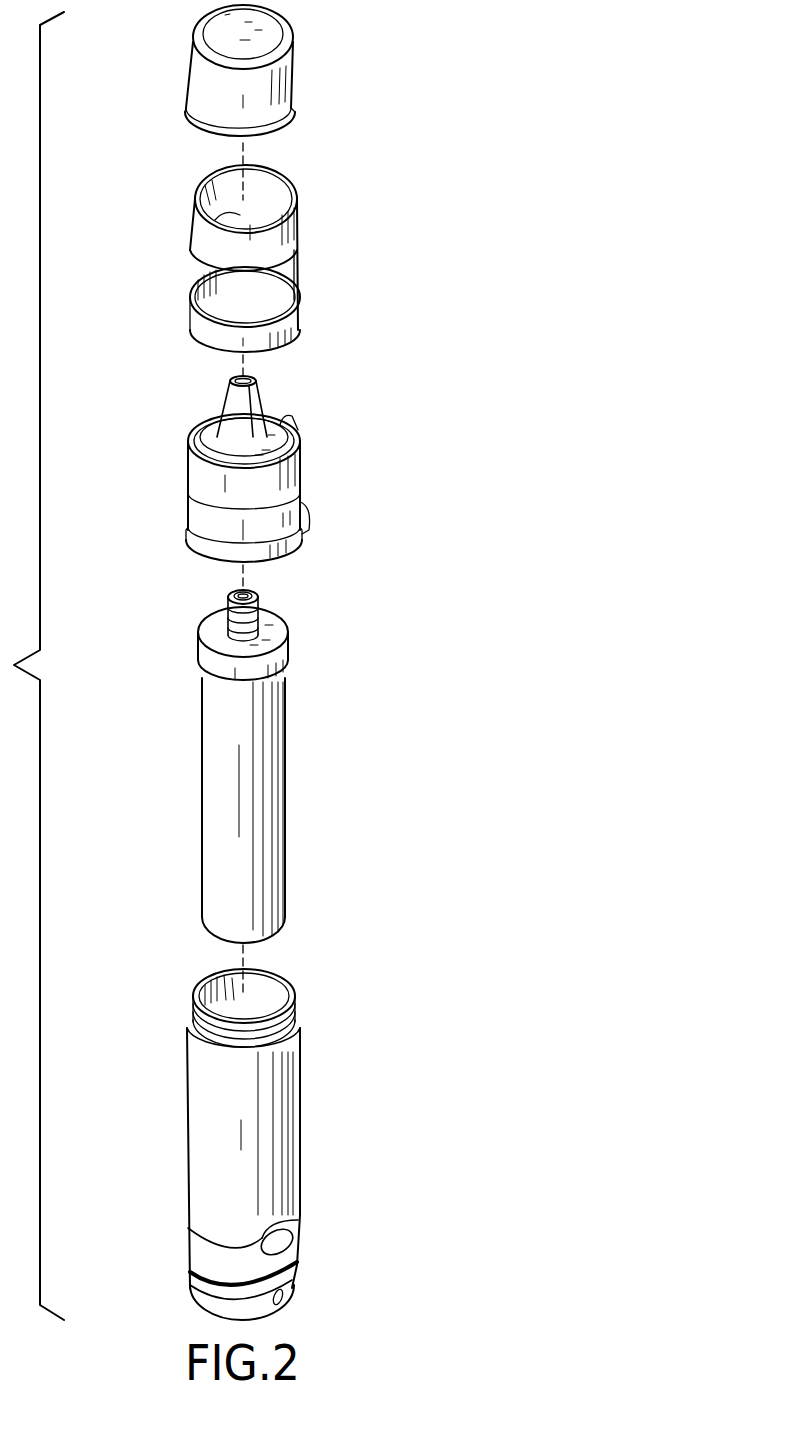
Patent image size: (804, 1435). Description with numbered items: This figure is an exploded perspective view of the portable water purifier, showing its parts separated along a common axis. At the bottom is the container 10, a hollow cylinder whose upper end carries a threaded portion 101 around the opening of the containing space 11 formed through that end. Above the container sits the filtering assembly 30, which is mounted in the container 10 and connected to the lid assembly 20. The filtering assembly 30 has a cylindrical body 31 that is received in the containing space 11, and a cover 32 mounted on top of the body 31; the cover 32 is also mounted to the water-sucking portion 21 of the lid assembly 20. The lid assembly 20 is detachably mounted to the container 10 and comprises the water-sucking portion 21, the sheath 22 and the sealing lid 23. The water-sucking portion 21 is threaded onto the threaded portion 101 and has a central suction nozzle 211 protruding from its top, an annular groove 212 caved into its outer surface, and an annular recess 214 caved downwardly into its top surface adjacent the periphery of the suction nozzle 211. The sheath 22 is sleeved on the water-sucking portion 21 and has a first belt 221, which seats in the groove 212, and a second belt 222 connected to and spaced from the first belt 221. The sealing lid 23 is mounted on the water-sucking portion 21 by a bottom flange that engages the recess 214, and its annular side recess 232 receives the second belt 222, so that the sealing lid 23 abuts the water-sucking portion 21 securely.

The container 10 is at (326, 1134).
The containing space 11 is at (272, 997).
The threaded portion 101 is at (192, 1020).
The lid assembly 20 is at (435, 342).
The water-sucking portion 21 is at (326, 486).
The suction nozzle 211 is at (237, 412).
The groove 212 is at (203, 513).
The recess 214 is at (285, 420).
The sheath 22 is at (328, 264).
The first belt 221 is at (193, 323).
The second belt 222 is at (198, 237).
The sealing lid 23 is at (321, 79).
The side recess 232 is at (205, 88).
The filtering assembly 30 is at (333, 766).
The body 31 is at (218, 833).
The cover 32 is at (218, 628).